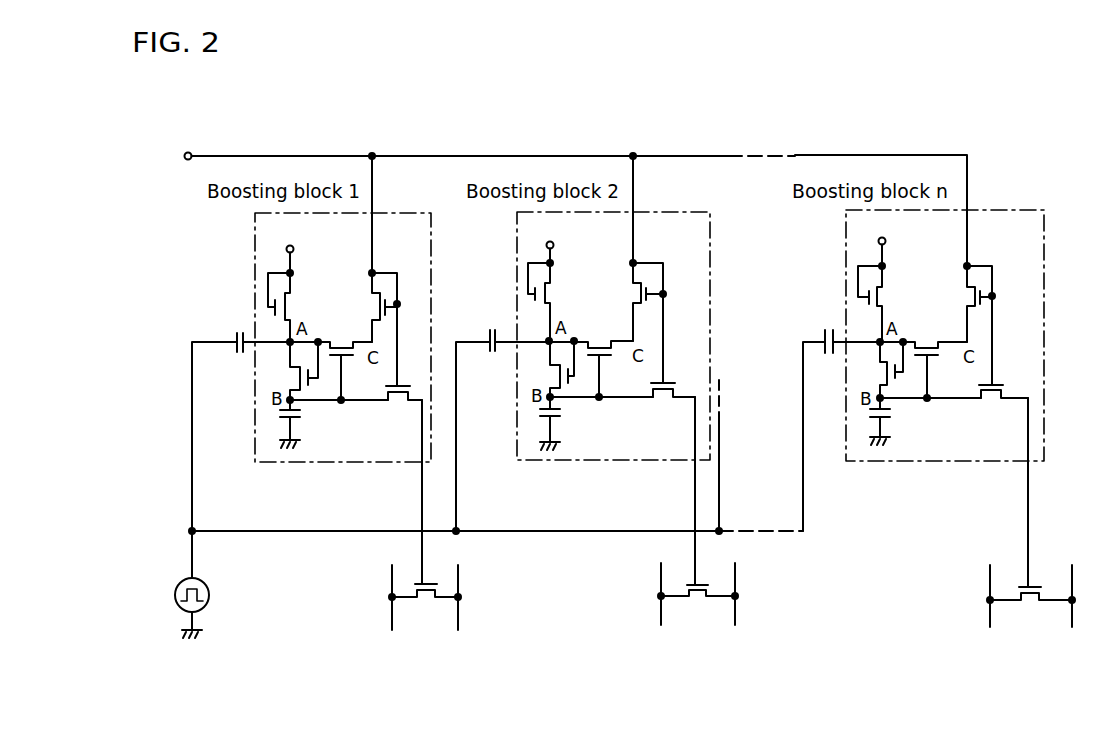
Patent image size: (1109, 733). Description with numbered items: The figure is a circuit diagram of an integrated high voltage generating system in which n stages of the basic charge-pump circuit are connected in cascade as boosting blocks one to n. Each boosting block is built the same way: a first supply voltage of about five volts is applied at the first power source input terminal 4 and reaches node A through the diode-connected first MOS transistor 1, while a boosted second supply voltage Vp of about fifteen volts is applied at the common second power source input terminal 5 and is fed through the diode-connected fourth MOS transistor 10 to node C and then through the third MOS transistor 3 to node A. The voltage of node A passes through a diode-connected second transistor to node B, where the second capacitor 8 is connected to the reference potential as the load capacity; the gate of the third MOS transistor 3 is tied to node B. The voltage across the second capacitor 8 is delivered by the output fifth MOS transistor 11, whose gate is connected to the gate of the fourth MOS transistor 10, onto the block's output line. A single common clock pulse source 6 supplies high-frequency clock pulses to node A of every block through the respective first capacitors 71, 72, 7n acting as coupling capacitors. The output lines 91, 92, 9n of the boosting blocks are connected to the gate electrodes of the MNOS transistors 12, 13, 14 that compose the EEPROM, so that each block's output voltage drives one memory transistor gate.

The first MOS transistor 1 is at (291, 306).
The third MOS transistor 3 is at (341, 340).
The first power source input terminal 4 is at (287, 245).
The second power source input terminal 5 is at (182, 154).
The clock pulse source 6 is at (172, 592).
The first capacitor 71 is at (238, 330).
The first capacitor 72 is at (489, 326).
The first capacitor 7n is at (823, 328).
The second capacitor 8 is at (305, 414).
The fourth MOS transistor 10 is at (369, 293).
The fifth MOS transistor 11 is at (399, 406).
The output line 91 is at (420, 485).
The output line 92 is at (694, 482).
The output line 9n is at (1027, 482).
The MNOS transistor 12 is at (413, 578).
The MNOS transistor 13 is at (684, 577).
The MNOS transistor 14 is at (1018, 573).